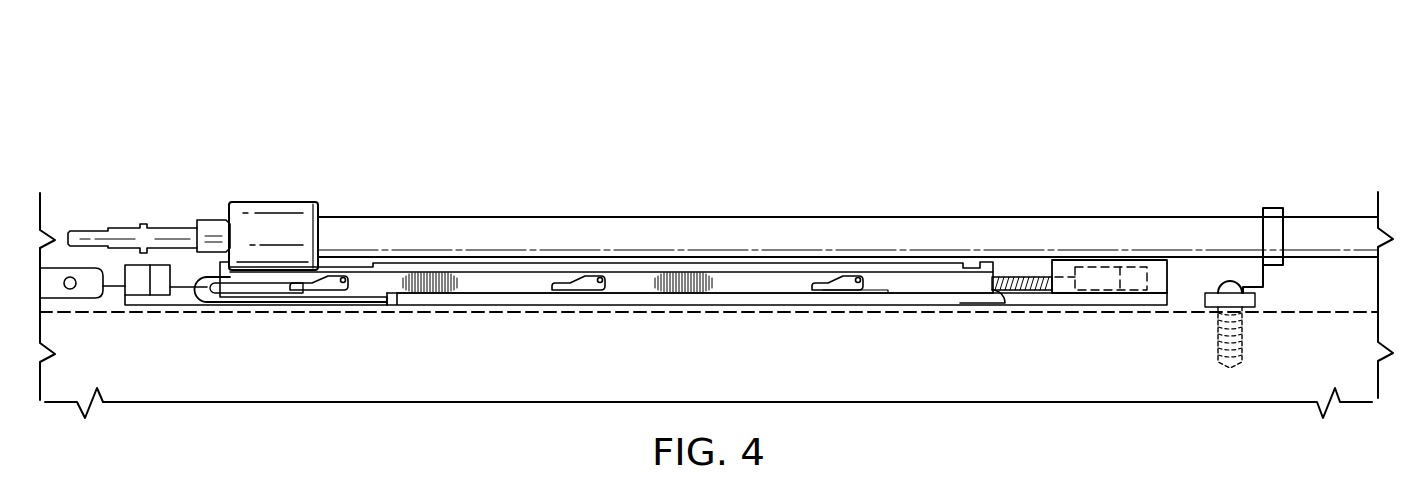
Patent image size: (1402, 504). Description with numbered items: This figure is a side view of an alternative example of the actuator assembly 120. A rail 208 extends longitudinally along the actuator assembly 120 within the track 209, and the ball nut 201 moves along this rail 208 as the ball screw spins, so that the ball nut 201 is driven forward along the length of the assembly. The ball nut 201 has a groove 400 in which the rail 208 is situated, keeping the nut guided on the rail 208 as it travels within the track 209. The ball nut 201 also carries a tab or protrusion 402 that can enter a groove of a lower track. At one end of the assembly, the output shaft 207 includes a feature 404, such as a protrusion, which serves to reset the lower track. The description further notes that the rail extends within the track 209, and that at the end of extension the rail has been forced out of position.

The actuator assembly 120 is at (452, 82).
The ball nut 201 is at (271, 199).
The output shaft 207 is at (970, 217).
The rail 208 is at (515, 270).
The track 209 is at (738, 285).
The groove 400 is at (208, 268).
The tab or protrusion 402 is at (347, 265).
The feature 404 is at (1273, 207).